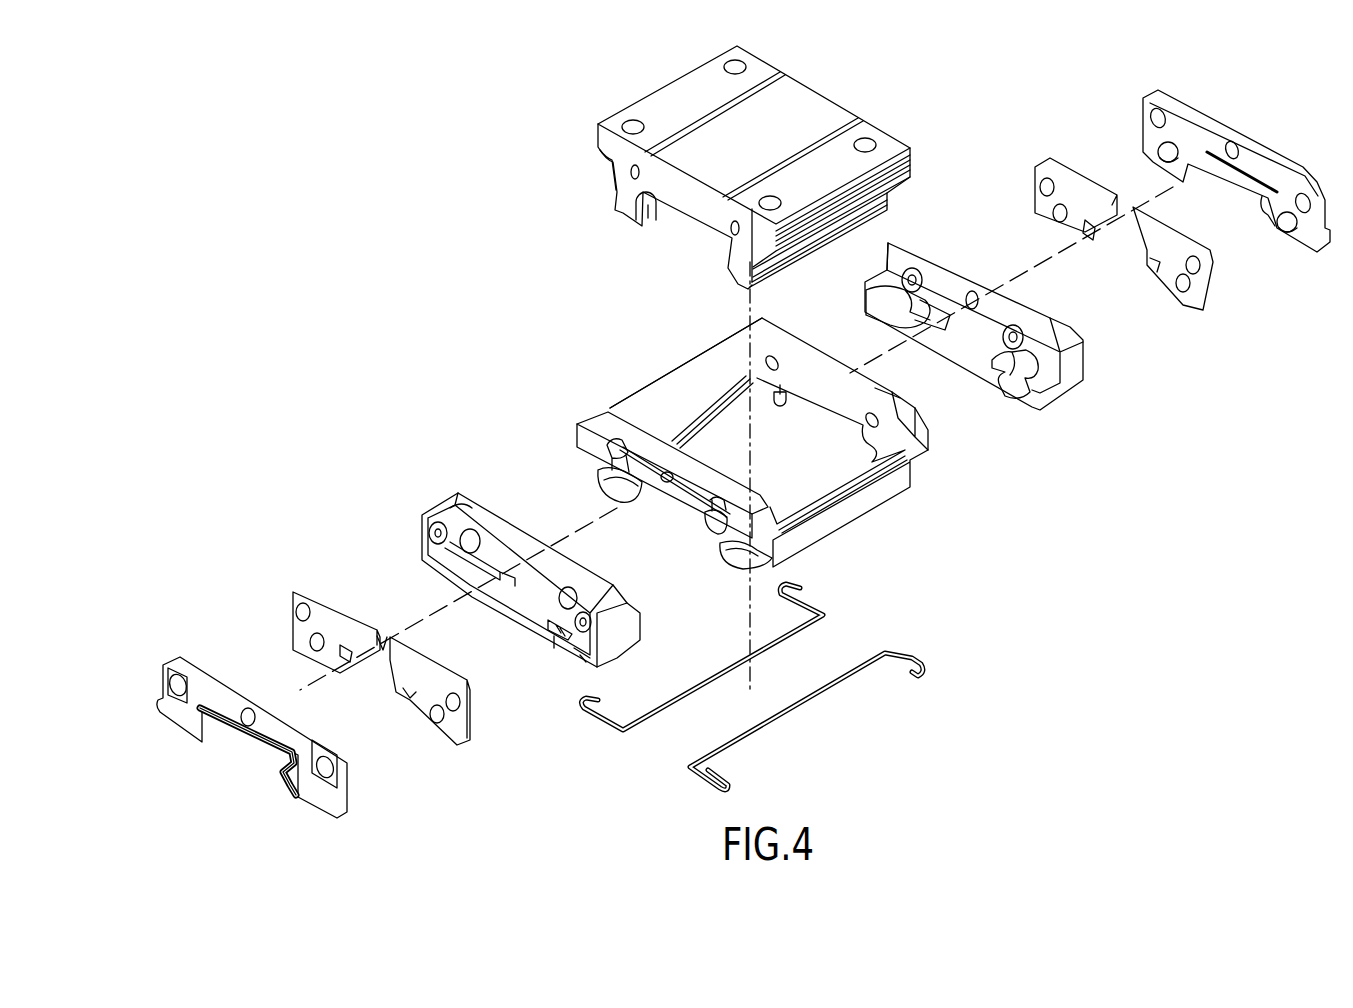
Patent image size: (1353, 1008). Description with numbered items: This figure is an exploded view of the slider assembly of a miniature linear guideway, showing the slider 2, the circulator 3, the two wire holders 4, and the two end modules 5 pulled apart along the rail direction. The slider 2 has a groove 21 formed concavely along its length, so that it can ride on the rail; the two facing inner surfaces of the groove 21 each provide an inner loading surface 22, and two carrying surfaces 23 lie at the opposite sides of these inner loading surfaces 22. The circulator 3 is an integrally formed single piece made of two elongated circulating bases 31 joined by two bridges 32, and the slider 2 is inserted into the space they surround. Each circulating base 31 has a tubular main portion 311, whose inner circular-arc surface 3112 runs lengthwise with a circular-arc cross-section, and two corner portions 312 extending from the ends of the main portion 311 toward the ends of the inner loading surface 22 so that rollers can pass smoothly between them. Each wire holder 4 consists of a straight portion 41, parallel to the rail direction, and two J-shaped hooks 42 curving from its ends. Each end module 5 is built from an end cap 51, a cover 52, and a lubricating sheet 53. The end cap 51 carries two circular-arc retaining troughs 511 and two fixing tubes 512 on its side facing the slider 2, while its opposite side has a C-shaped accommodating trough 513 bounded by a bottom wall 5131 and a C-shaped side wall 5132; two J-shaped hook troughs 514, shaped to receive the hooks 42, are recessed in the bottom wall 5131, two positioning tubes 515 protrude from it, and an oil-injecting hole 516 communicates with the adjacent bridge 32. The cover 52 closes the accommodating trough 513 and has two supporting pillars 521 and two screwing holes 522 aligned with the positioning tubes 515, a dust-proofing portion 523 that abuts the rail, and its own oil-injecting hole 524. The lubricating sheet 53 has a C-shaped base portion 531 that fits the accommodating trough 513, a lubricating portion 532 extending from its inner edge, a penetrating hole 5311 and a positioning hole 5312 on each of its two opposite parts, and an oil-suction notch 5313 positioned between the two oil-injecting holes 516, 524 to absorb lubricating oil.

The slider 2 is at (624, 98).
The groove 21 is at (696, 240).
The inner loading surface 22 is at (650, 214).
The carrying surface 23 is at (616, 193).
The circulator 3 is at (878, 522).
The circulating base 31 is at (646, 419).
The main portion 311 is at (650, 408).
The corner portion 312 is at (605, 485).
The inner circular-arc surface 3112 is at (698, 386).
The bridge 32 is at (890, 392).
The wire holder 4 is at (801, 687).
The straight portion 41 is at (835, 680).
The J-shaped hook 42 is at (912, 657).
The end module 5 is at (347, 517).
The end cap 51 is at (732, 444).
The retaining trough 511 is at (858, 303).
The fixing tube 512 is at (920, 270).
The accommodating trough 513 is at (452, 475).
The bottom wall 5131 is at (489, 493).
The side wall 5132 is at (428, 530).
The hook trough 514 is at (550, 632).
The positioning tube 515 is at (580, 640).
The oil-injecting hole 516 is at (972, 306).
The cover 52 is at (706, 464).
The supporting pillar 521 is at (1284, 232).
The screwing hole 522 is at (172, 683).
The dust-proofing portion 523 is at (280, 782).
The oil-injecting hole 524 is at (248, 728).
The lubricating sheet 53 is at (700, 467).
The base portion 531 is at (442, 694).
The lubricating portion 532 is at (302, 675).
The penetrating hole 5311 is at (310, 642).
The positioning hole 5312 is at (296, 610).
The oil-suction notch 5313 is at (378, 612).